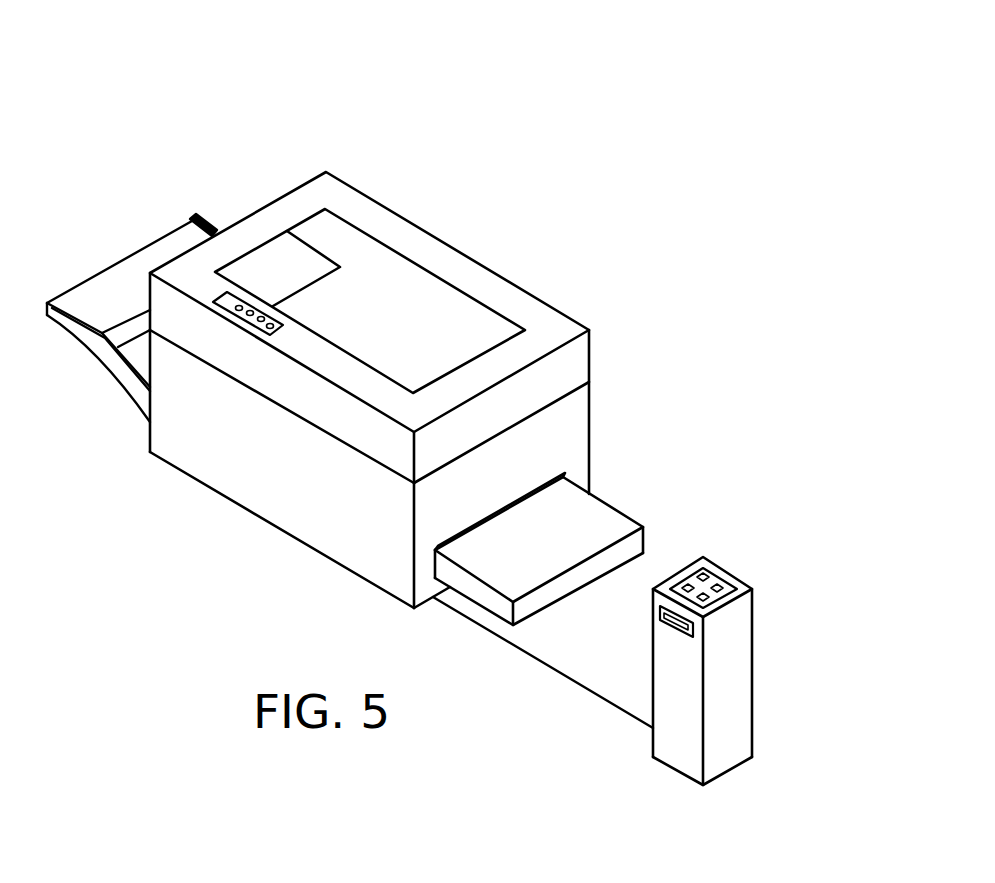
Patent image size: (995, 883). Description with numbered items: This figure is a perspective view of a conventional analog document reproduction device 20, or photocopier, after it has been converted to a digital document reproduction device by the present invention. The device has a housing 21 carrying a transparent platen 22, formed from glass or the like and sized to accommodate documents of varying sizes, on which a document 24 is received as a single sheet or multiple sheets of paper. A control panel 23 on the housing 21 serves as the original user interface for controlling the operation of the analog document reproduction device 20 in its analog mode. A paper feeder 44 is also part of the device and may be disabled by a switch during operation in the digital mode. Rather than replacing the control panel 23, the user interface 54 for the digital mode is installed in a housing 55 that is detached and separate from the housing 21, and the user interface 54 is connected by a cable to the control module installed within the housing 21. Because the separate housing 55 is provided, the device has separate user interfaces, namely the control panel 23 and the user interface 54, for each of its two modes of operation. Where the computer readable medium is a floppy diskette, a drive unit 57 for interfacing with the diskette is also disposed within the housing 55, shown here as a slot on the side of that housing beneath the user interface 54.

The analog document reproduction device 20 is at (520, 112).
The housing 21 is at (523, 287).
The platen 22 is at (350, 243).
The control panel 23 is at (213, 300).
The document 24 is at (255, 263).
The paper feeder 44 is at (633, 517).
The user interface 54 is at (720, 578).
The housing 55 is at (742, 655).
The drive unit 57 is at (657, 627).